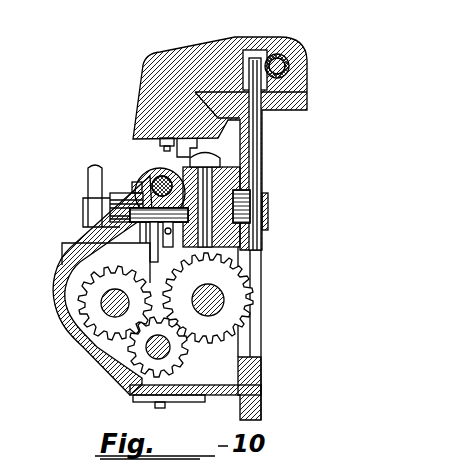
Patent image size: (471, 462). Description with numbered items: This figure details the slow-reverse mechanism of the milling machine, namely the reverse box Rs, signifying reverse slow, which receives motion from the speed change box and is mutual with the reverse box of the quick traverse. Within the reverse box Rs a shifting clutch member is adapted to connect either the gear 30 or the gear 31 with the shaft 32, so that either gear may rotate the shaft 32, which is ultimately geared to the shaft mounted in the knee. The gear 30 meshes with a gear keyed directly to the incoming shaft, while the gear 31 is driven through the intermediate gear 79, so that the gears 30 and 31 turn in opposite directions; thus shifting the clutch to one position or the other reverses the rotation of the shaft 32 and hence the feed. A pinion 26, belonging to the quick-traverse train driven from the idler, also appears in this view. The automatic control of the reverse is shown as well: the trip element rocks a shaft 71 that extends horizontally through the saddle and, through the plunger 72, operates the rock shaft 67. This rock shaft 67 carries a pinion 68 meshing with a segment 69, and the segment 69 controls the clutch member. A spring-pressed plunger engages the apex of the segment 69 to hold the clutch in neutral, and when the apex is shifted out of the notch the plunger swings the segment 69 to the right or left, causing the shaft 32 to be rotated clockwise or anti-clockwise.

The shaft 71 is at (290, 68).
The plunger 72 is at (263, 140).
The rock shaft 67 is at (268, 210).
The pinion 68 is at (160, 236).
The segment 69 is at (223, 298).
The gear 31 is at (240, 294).
The shaft 32 is at (222, 305).
The pinion 26 is at (104, 331).
The gear 30 is at (103, 322).
The intermediate gear 79 is at (176, 346).
The reverse box Rs is at (60, 290).